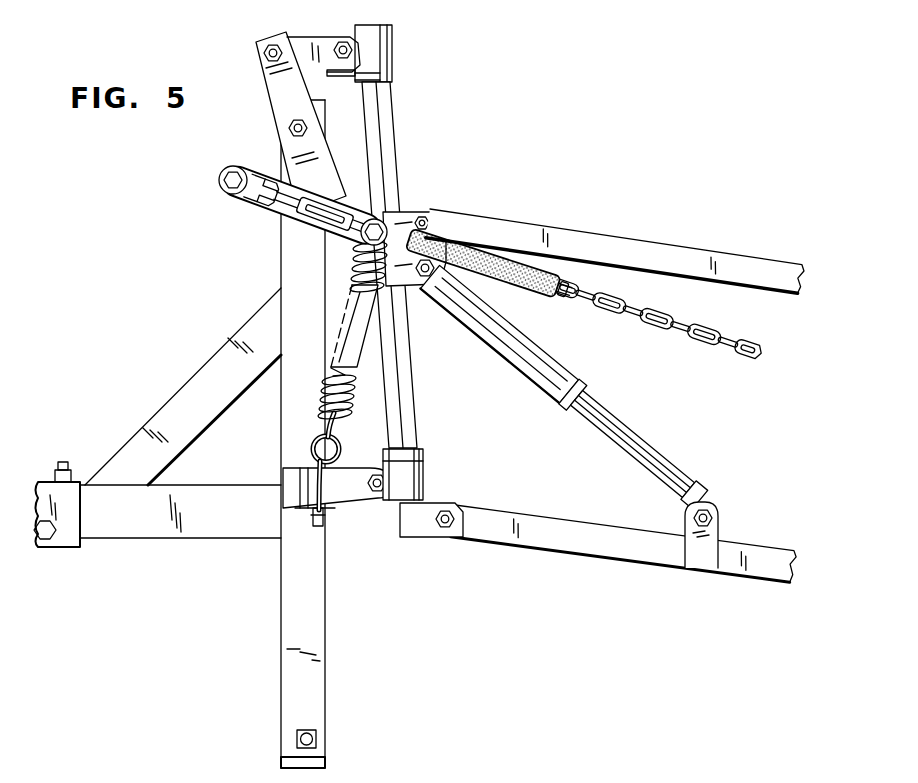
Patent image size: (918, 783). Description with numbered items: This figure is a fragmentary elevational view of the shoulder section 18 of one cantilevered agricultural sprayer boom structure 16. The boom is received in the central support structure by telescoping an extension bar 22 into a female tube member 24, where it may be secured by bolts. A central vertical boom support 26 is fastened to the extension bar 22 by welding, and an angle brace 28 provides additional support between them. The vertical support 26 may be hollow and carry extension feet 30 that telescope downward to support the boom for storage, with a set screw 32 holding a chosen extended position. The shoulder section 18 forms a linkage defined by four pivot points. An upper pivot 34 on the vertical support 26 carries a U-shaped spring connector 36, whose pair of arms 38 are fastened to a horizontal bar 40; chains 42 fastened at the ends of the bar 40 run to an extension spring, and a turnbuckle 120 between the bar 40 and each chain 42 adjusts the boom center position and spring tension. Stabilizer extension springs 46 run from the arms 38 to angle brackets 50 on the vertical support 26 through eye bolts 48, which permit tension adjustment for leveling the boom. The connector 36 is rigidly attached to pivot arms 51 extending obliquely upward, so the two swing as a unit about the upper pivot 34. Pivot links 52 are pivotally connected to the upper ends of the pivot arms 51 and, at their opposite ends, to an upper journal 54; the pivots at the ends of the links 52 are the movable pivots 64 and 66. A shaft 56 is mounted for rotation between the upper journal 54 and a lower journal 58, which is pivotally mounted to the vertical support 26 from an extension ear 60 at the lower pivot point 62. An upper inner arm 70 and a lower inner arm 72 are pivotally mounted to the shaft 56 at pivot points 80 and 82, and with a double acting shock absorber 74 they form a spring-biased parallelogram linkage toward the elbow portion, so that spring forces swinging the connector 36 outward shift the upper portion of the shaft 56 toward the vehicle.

The sprayer boom structure 16 is at (668, 158).
The shoulder section 18 is at (252, 304).
The extension bar 22 is at (167, 531).
The female tube member 24 is at (63, 542).
The central vertical boom support 26 is at (294, 609).
The angle brace 28 is at (212, 374).
The extension feet 30 is at (320, 768).
The set screw 32 is at (312, 737).
The upper pivot 34 is at (289, 128).
The U-shaped spring connector 36 is at (266, 224).
The arms 38 is at (250, 213).
The horizontal bar 40 is at (237, 208).
The chains 42 is at (728, 334).
The stabilizer extension springs 46 is at (354, 285).
The eye bolts 48 is at (318, 467).
The angle brackets 50 is at (296, 497).
The pivot arms 51 is at (274, 92).
The pivot links 52 is at (305, 44).
The upper journal 54 is at (381, 56).
The shaft 56 is at (394, 144).
The lower journal 58 is at (424, 474).
The extension ear 60 is at (348, 490).
The lower pivot point 62 is at (375, 473).
The pivot 64 is at (263, 53).
The pivot 66 is at (343, 41).
The upper inner arm 70 is at (612, 242).
The lower inner arm 72 is at (609, 548).
The double acting shock absorber 74 is at (578, 388).
The pivot point 80 is at (426, 218).
The pivot point 82 is at (446, 528).
The turnbuckle 120 is at (322, 215).